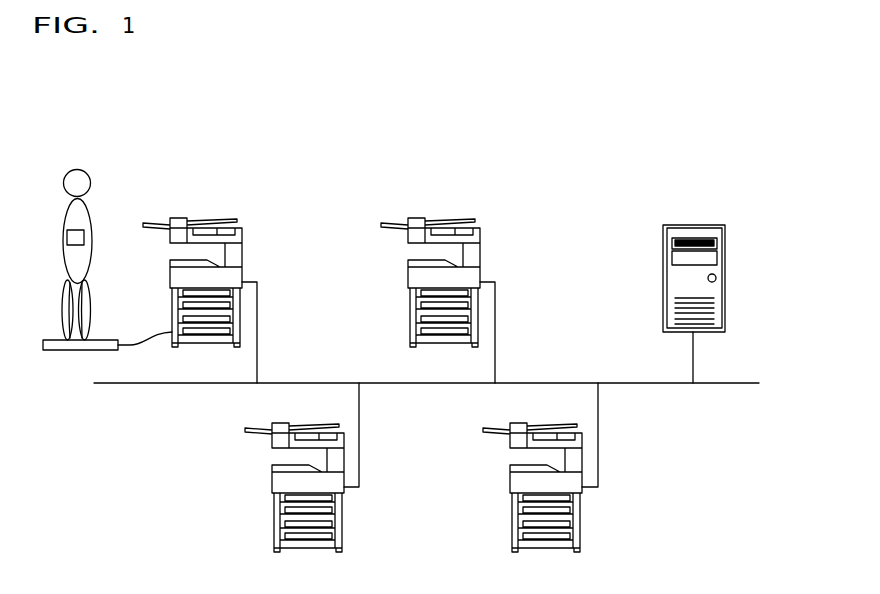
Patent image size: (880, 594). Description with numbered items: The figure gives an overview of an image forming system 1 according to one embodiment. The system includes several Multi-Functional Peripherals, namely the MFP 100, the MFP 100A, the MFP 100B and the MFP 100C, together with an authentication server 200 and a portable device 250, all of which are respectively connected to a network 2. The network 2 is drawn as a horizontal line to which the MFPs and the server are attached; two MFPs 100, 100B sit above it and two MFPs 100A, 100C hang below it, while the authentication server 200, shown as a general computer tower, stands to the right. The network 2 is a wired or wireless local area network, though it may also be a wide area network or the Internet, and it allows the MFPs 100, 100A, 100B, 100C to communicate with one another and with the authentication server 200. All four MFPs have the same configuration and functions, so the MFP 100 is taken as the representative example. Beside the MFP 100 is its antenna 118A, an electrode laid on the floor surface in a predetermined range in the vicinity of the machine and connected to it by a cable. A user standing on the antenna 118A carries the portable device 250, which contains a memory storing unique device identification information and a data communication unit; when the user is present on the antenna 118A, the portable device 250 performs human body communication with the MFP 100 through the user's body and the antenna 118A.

The image forming system 1 is at (376, 151).
The network 2 is at (563, 383).
The Multi-Functional Peripheral 100 is at (220, 220).
The Multi-Functional Peripheral 100A is at (347, 522).
The Multi-Functional Peripheral 100B is at (455, 217).
The Multi-Functional Peripheral 100C is at (583, 522).
The antenna 118A is at (98, 339).
The authentication server 200 is at (697, 225).
The portable device 250 is at (80, 234).